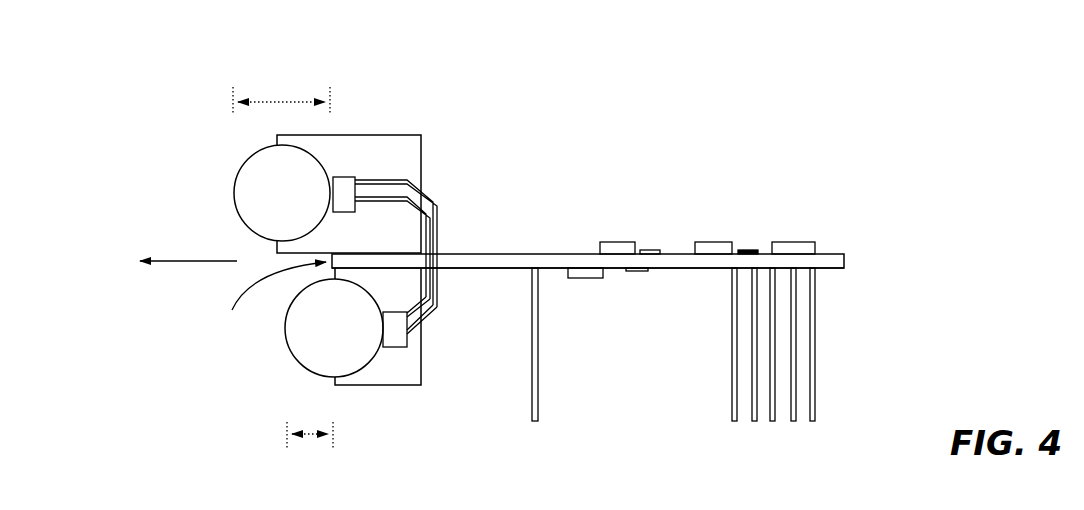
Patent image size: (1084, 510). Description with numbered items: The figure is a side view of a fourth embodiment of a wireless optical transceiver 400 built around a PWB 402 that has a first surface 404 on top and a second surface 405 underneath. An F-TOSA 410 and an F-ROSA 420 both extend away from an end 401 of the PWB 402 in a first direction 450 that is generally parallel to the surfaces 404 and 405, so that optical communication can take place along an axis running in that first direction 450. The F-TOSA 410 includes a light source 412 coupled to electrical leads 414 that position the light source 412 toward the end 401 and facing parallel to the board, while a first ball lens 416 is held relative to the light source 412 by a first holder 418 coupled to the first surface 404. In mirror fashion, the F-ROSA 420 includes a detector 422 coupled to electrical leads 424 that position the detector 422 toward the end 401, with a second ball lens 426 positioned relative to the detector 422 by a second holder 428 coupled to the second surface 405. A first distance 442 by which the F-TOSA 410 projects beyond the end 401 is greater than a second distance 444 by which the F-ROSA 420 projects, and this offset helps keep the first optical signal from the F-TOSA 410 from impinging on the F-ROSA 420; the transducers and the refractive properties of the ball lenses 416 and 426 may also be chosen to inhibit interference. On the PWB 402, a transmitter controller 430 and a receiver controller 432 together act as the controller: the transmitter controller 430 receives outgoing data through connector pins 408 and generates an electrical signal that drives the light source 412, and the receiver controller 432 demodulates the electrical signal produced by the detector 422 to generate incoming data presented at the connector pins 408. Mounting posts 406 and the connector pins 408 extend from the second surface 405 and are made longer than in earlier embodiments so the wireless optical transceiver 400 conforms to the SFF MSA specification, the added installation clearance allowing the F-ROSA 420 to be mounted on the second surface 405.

The wireless optical transceiver 400 is at (76, 93).
The end 401 is at (269, 300).
The PWB 402 is at (483, 260).
The first surface 404 is at (568, 253).
The second surface 405 is at (458, 270).
The mounting posts 406 is at (536, 352).
The connector pins 408 is at (755, 352).
The F-TOSA 410 is at (226, 193).
The light source 412 is at (343, 177).
The electrical leads 414 is at (432, 205).
The first ball lens 416 is at (258, 168).
The first holder 418 is at (371, 135).
The F-ROSA 420 is at (281, 355).
The detector 422 is at (396, 348).
The electrical leads 424 is at (429, 323).
The second ball lens 426 is at (322, 363).
The second holder 428 is at (367, 385).
The transmitter controller 430 is at (628, 242).
The receiver controller 432 is at (722, 242).
The first distance 442 is at (297, 102).
The second distance 444 is at (310, 434).
The first direction 450 is at (200, 261).